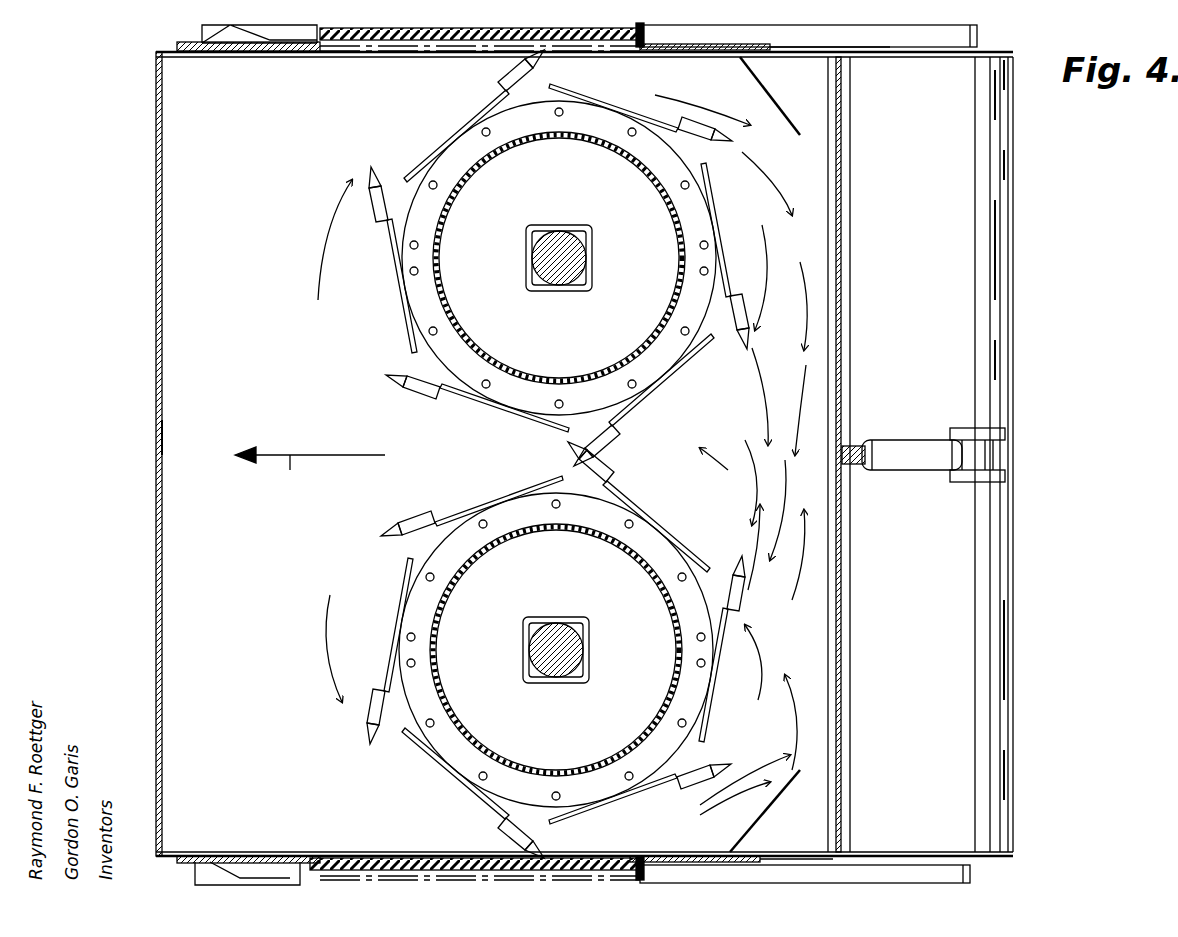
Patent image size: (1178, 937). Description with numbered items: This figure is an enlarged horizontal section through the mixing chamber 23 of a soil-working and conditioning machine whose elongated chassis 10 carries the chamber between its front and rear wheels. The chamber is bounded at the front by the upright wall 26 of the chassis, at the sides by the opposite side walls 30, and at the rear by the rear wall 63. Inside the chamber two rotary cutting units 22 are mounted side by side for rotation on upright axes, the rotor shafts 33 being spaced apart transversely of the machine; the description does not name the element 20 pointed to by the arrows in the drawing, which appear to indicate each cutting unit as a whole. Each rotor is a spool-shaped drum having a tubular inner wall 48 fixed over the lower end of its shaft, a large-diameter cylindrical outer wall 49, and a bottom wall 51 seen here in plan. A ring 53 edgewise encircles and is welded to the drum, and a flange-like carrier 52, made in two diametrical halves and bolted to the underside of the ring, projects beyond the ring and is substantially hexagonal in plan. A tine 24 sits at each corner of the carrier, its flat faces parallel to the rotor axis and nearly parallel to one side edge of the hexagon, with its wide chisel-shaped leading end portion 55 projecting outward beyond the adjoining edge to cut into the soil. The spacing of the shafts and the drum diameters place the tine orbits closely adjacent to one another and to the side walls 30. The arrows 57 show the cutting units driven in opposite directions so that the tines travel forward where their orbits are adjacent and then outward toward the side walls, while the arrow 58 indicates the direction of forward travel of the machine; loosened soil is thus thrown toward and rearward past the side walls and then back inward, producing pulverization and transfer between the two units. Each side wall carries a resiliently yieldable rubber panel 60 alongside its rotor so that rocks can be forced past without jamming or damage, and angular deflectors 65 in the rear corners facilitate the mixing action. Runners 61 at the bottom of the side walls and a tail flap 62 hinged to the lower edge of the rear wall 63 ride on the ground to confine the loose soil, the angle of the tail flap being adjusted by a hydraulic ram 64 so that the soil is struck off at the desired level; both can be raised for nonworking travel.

The chassis 10 is at (120, 86).
The rotor 20 is at (546, 454).
The rotary cutting unit 22 is at (420, 310).
The mixing chamber 23 is at (215, 330).
The tine 24 is at (548, 62).
The upright wall 26 is at (180, 436).
The side wall 30 is at (250, 51).
The rotor shaft 33 is at (594, 252).
The tubular inner wall 48 is at (562, 290).
The cylindrical outer wall 49 is at (652, 336).
The bottom wall 51 is at (496, 420).
The carrier 52 is at (462, 398).
The ring 53 is at (410, 290).
The leading end portion 55 is at (540, 75).
The arrows 57 is at (340, 236).
The arrow 58 is at (290, 470).
The panel 60 is at (380, 46).
The runner 61 is at (200, 36).
The tail flap 62 is at (962, 526).
The rear wall 63 is at (838, 608).
The hydraulic ram 64 is at (912, 448).
The angular deflector 65 is at (772, 82).